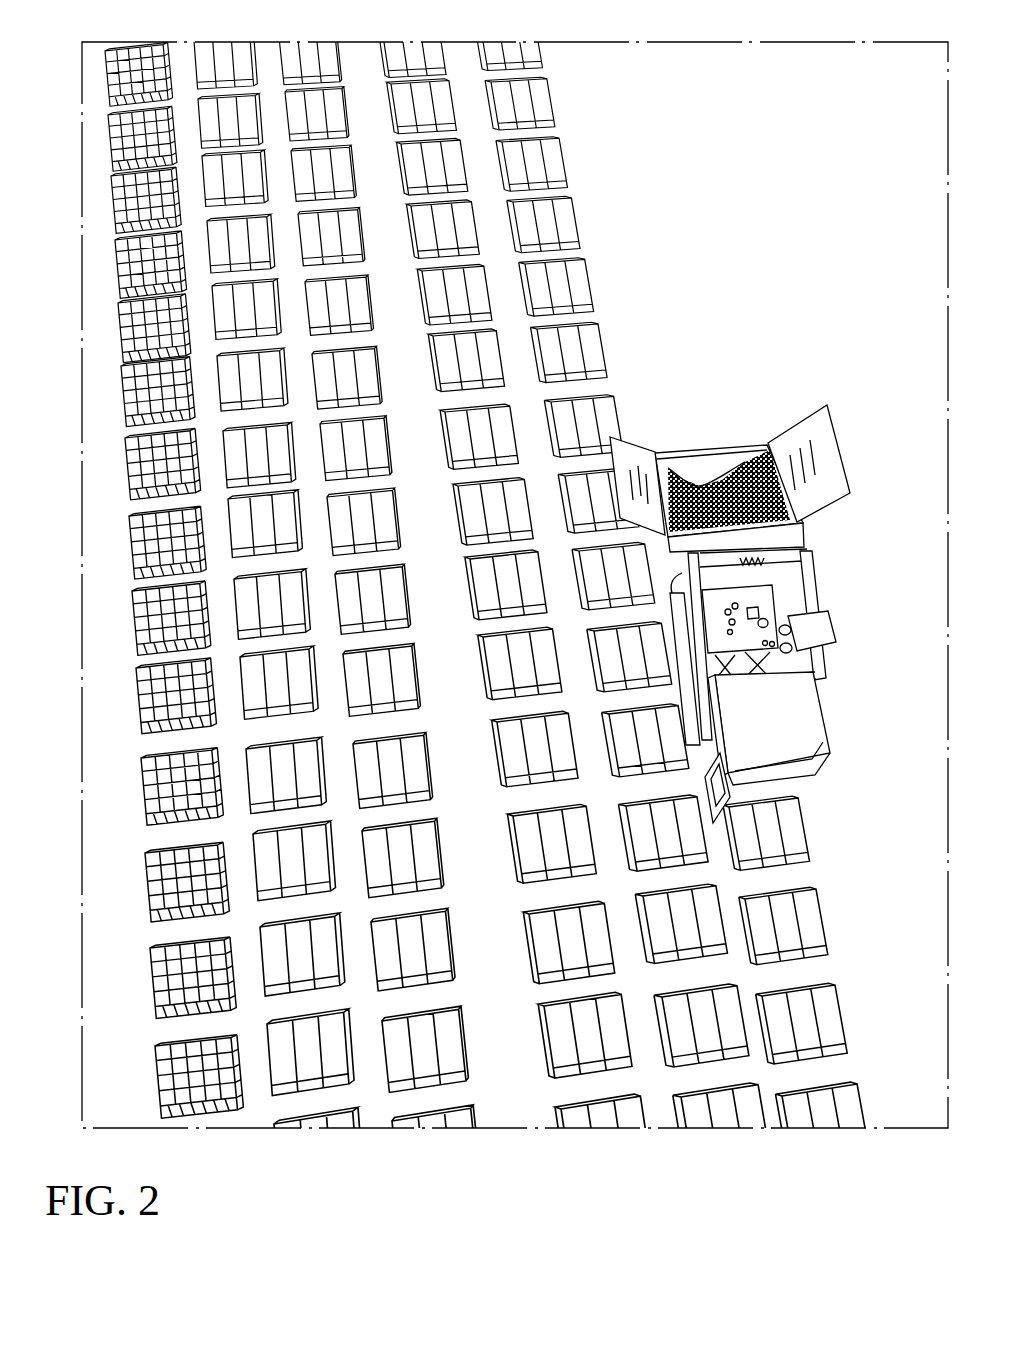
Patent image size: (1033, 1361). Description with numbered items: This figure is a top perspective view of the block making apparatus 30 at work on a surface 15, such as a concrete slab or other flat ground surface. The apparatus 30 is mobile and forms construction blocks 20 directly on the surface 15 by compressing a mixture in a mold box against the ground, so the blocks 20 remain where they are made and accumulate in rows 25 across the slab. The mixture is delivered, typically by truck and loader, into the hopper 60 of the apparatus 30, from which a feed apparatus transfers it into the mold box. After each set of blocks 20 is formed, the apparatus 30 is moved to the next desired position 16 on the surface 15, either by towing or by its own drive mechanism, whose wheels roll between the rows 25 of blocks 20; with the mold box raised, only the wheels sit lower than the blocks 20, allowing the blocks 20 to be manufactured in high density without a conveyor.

The surface 15 is at (903, 470).
The next desired position 16 is at (704, 430).
The construction blocks 20 is at (513, 165).
The rows 25 is at (130, 403).
The block making apparatus 30 is at (830, 532).
The hopper 60 is at (818, 447).